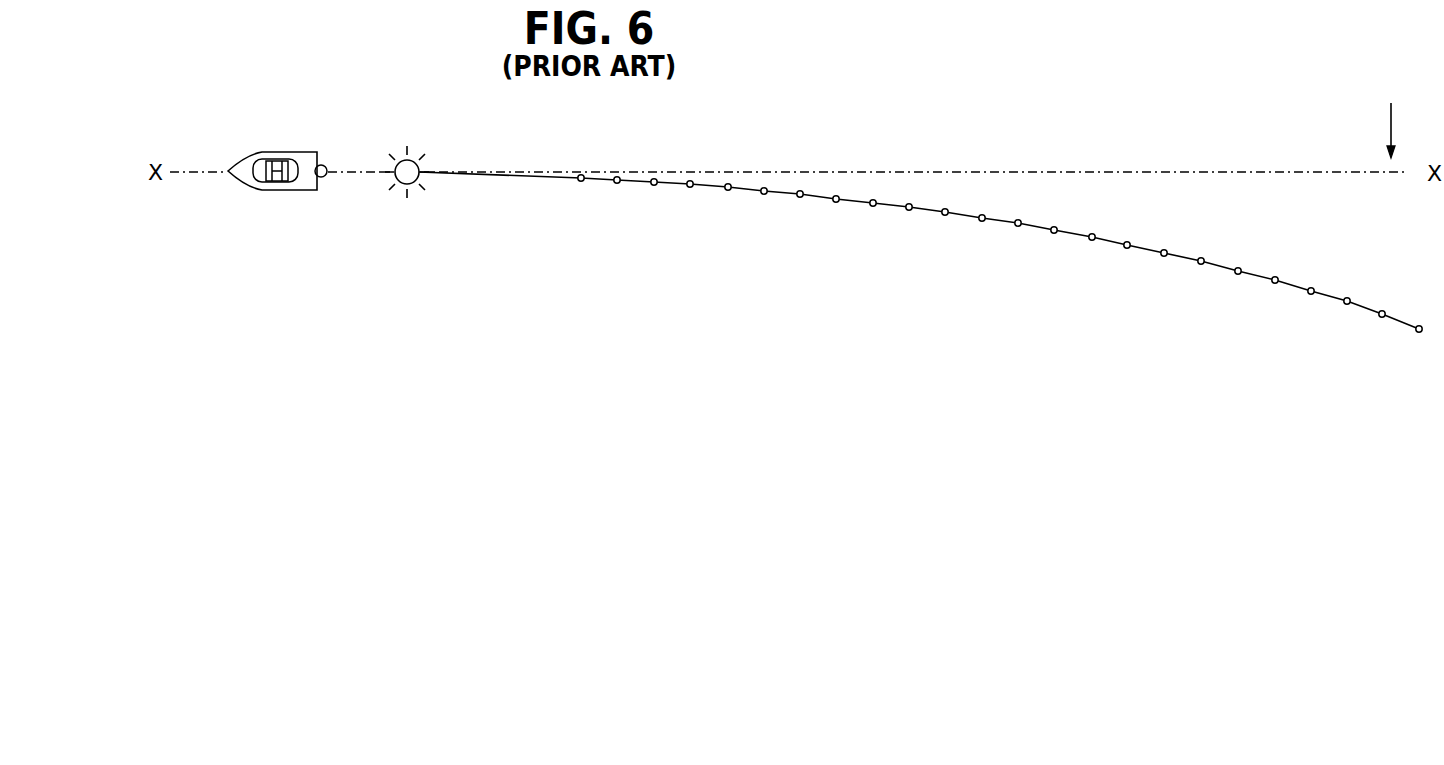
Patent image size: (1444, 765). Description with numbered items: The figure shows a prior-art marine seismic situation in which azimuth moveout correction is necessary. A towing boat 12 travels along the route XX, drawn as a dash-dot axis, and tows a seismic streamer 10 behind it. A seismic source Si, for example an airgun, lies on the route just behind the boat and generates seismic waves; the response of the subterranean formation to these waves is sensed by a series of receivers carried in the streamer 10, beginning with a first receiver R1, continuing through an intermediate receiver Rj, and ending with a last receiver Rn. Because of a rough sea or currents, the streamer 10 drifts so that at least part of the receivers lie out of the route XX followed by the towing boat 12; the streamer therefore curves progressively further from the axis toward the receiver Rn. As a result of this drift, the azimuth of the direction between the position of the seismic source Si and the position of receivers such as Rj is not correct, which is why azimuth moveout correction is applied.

The towing boat 12 is at (272, 191).
The seismic streamer 10 is at (706, 188).
The seismic source Si is at (407, 158).
The first receiver R1 is at (582, 181).
The receiver out of route Rj is at (982, 221).
The last receiver Rn is at (1422, 332).